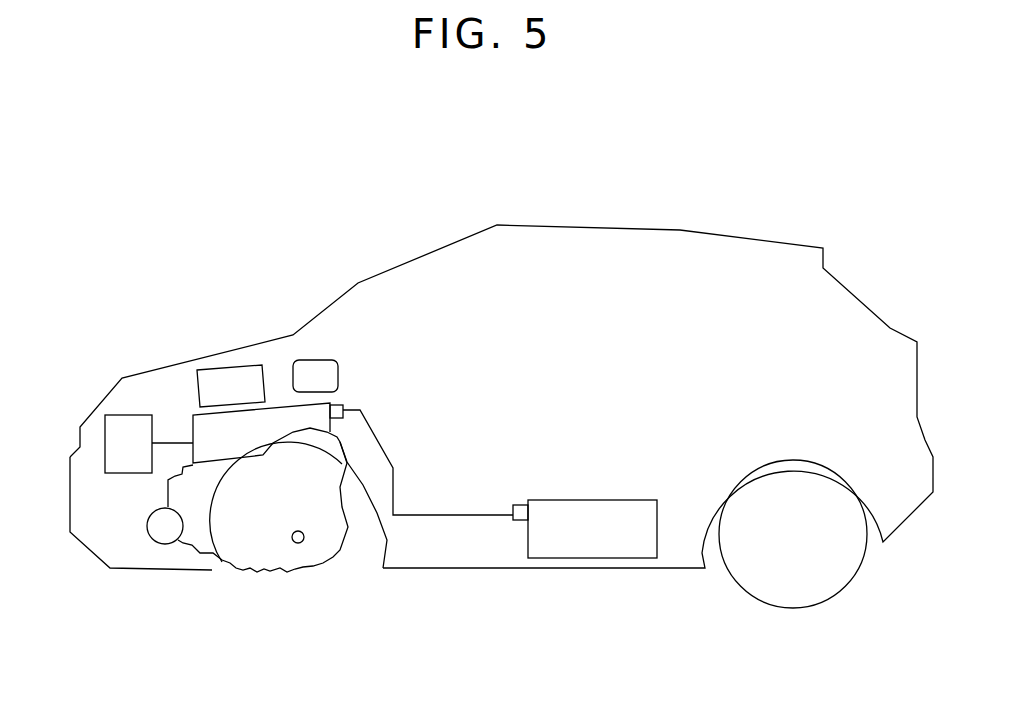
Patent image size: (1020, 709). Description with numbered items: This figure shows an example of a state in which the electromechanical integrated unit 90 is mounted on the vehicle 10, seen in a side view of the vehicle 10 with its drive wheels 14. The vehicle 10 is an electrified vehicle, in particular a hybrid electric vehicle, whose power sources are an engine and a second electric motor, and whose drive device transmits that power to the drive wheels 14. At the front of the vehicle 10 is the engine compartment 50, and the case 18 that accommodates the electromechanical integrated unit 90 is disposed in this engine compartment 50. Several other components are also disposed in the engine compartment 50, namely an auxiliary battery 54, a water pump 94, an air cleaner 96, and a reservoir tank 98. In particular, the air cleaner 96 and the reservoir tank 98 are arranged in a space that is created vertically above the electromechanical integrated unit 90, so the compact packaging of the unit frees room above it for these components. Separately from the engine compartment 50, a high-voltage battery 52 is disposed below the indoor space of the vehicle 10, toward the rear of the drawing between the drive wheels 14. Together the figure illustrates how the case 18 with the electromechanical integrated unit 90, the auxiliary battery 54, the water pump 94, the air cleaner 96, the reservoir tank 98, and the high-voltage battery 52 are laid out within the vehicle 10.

The vehicle 10 is at (545, 202).
The drive wheels 14 is at (270, 592).
The case 18 is at (300, 570).
The engine compartment 50 is at (100, 502).
The high-voltage battery 52 is at (573, 543).
The auxiliary battery 54 is at (117, 452).
The electromechanical integrated unit 90 is at (360, 452).
The water pump 94 is at (168, 528).
The air cleaner 96 is at (228, 385).
The reservoir tank 98 is at (313, 370).